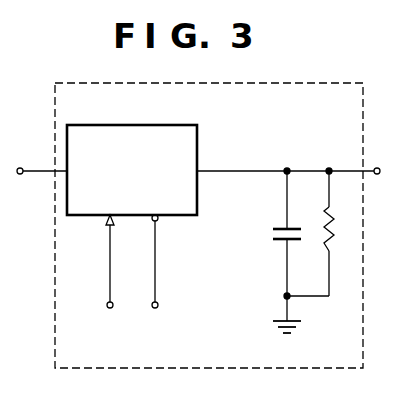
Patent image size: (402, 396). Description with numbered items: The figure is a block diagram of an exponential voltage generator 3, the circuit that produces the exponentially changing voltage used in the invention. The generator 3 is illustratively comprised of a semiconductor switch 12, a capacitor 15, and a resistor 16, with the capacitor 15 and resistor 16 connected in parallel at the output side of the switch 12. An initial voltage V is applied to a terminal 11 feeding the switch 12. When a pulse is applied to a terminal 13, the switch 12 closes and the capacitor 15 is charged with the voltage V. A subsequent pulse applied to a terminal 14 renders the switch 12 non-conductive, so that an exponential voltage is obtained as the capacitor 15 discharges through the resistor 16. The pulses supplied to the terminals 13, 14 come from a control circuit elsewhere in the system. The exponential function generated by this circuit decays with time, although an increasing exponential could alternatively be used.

The exponential voltage generator 3 is at (315, 119).
The terminal 11 is at (22, 174).
The semiconductor switch 12 is at (148, 125).
The terminal 13 is at (97, 263).
The terminal 14 is at (170, 263).
The capacitor 15 is at (274, 233).
The resistor 16 is at (343, 233).